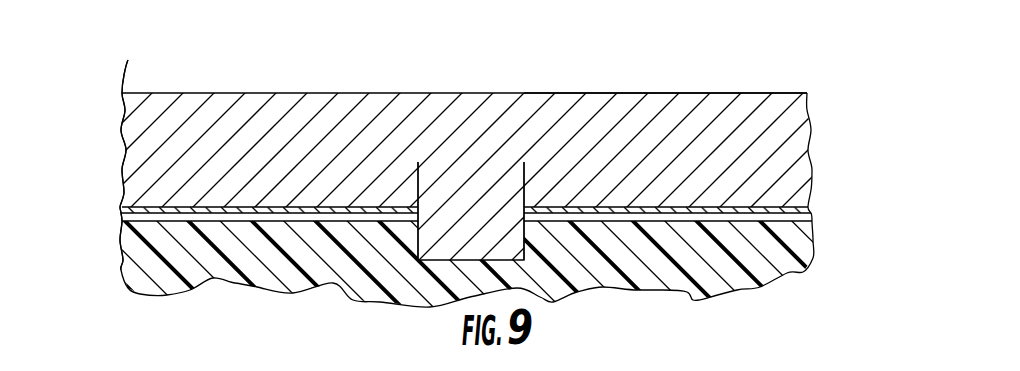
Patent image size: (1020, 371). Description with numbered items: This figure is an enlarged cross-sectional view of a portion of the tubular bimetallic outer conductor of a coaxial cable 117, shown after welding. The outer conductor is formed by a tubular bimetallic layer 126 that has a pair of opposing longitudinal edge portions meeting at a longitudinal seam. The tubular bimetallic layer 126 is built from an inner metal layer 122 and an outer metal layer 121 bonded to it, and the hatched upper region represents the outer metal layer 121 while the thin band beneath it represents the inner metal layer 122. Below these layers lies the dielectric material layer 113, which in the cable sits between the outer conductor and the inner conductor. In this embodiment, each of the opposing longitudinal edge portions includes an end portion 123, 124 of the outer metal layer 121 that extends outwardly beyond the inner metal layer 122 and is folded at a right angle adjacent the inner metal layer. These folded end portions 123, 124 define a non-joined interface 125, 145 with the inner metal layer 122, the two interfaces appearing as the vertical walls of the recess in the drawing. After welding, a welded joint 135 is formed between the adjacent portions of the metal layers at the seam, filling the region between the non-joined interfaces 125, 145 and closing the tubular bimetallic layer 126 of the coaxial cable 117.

The coaxial cable 117 is at (155, 55).
The outer metal layer 121 is at (798, 120).
The inner metal layer 122 is at (803, 212).
The dielectric material layer 113 is at (807, 252).
The end portion of the outer metal layer 123 is at (396, 78).
The end portion of the outer metal layer 124 is at (591, 79).
The non-joined interface 125 is at (417, 185).
The non-joined interface 145 is at (527, 193).
The welded joint 135 is at (477, 260).
The tubular bimetallic layer 126 is at (118, 192).